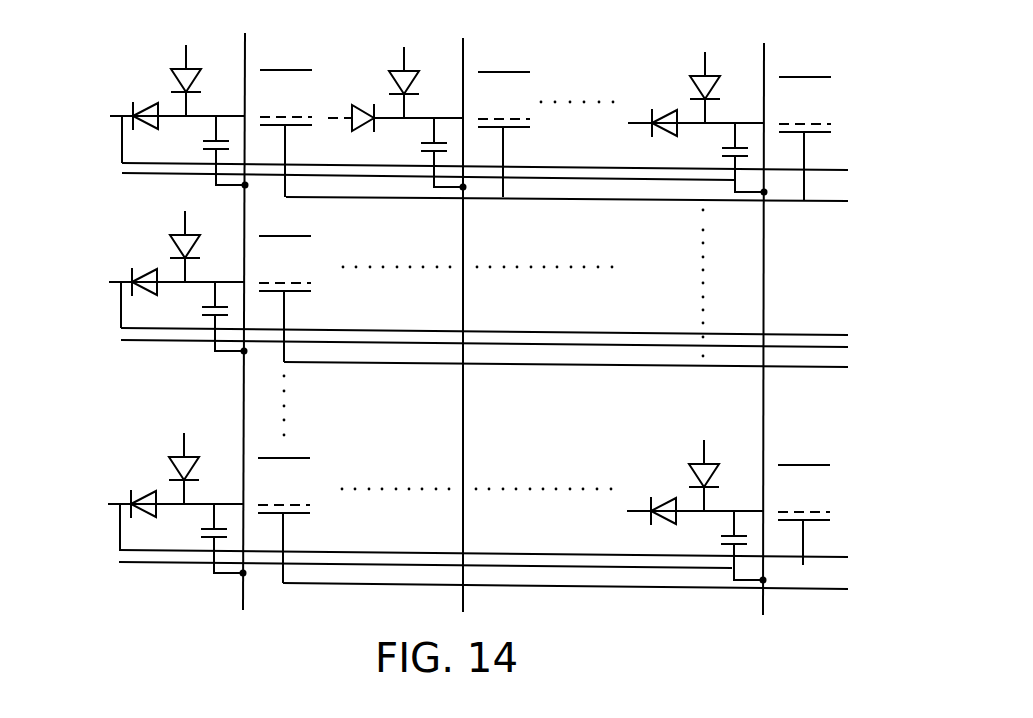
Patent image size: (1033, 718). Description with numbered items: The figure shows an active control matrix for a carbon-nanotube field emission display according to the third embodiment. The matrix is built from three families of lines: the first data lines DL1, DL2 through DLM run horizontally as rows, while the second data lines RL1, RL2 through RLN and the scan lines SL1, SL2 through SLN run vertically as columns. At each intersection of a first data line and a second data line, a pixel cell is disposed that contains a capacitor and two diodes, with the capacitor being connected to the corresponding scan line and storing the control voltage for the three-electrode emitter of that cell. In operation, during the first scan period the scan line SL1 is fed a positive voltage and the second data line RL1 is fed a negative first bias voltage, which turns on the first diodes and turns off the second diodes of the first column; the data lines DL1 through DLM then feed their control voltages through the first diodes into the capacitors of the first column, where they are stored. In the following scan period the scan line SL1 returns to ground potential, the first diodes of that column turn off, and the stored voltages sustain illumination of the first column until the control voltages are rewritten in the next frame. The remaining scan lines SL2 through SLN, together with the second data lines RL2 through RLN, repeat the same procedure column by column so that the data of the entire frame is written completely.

The first scan line SL1 is at (244, 305).
The second scan line SL2 is at (463, 307).
The Nth scan line SLN is at (767, 310).
The first second-data line RL1 is at (186, 61).
The second second-data line RL2 is at (405, 64).
The Nth second-data line RLN is at (708, 68).
The first data line DL1 is at (146, 130).
The second data line DL2 is at (143, 296).
The Mth data line DLM is at (141, 518).